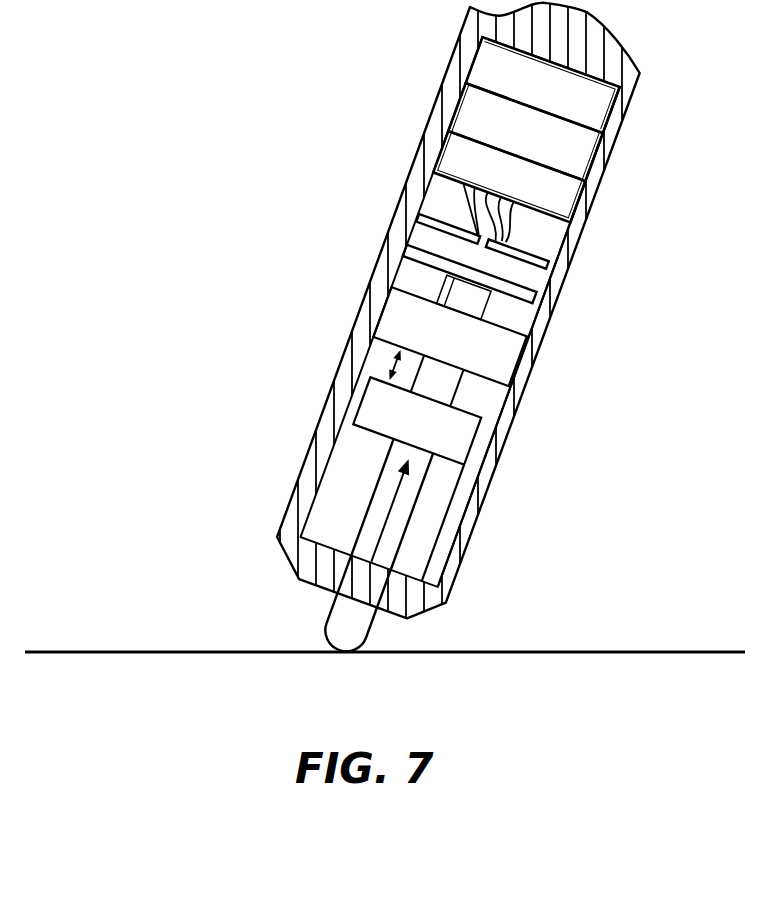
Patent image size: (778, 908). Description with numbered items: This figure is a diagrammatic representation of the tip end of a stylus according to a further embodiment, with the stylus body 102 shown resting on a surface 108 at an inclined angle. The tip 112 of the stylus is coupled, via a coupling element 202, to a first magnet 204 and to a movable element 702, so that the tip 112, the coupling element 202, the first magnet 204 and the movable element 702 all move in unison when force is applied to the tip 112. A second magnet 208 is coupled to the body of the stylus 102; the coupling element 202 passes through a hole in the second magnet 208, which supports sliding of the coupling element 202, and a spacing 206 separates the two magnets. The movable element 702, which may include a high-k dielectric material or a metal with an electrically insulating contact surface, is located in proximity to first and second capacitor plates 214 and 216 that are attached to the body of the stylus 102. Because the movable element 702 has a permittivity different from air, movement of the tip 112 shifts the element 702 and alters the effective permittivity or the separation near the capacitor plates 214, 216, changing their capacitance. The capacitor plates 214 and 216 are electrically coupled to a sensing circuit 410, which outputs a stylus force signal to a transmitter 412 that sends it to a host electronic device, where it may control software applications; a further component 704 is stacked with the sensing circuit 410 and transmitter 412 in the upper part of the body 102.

The stylus body 102 is at (294, 488).
The writing surface 108 is at (156, 651).
The tip 112 is at (328, 616).
The coupling element 202 is at (537, 329).
The first magnet 204 is at (372, 403).
The shaft coupling 206 is at (388, 505).
The second magnet 208 is at (394, 314).
The first capacitor plate 214 is at (441, 232).
The second capacitor plate 216 is at (548, 266).
The sensing circuit 410 is at (461, 153).
The transmitter 412 is at (473, 108).
The movable element 702 is at (531, 290).
The battery cell 704 is at (489, 62).